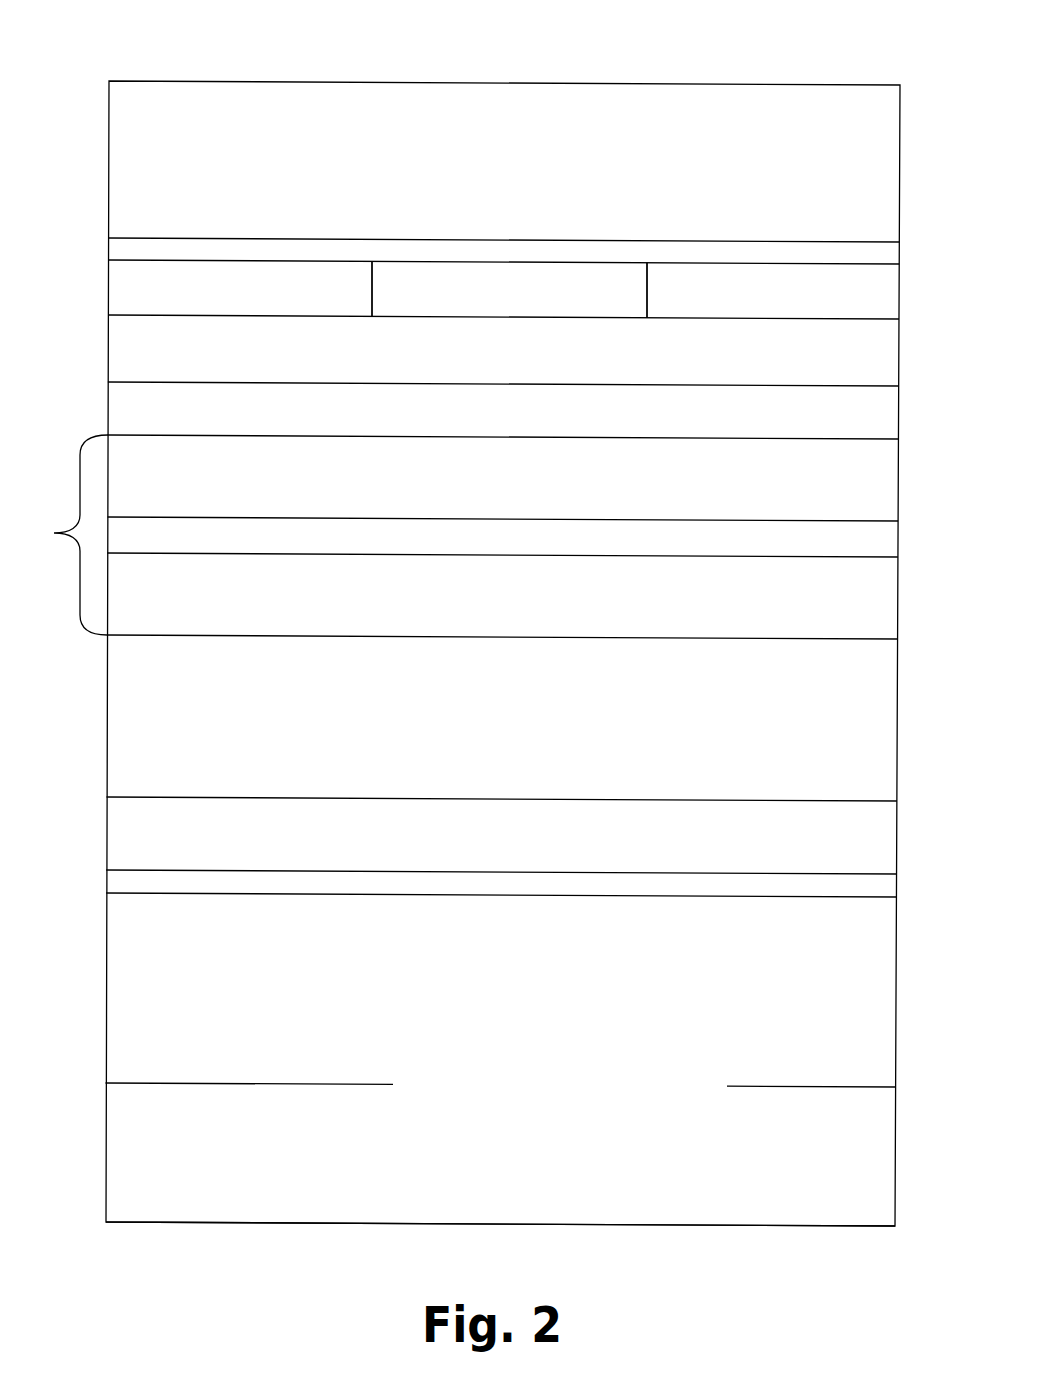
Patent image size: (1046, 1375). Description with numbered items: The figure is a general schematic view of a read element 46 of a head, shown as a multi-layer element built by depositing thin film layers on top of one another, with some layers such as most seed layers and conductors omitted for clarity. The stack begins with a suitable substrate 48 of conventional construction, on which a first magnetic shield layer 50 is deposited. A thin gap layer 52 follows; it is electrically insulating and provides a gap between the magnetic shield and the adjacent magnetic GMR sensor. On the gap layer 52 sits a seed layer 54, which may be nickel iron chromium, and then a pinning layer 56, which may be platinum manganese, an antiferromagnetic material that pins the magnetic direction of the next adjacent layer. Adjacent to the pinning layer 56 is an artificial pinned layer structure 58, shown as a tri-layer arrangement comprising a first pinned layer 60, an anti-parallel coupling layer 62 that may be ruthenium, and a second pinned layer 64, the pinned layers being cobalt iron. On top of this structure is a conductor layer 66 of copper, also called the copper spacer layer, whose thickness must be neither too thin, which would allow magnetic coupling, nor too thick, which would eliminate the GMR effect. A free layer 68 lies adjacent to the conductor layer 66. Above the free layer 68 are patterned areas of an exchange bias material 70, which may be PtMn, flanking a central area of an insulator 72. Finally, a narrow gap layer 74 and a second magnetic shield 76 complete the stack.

The read element 46 is at (819, 62).
The substrate 48 is at (256, 1168).
The first magnetic shield layer 50 is at (256, 981).
The gap layer 52 is at (128, 881).
The seed layer 54 is at (256, 846).
The pinning layer 56 is at (256, 726).
The artificial pinned layer structure 58 is at (61, 535).
The first pinned layer 60 is at (256, 611).
The anti-parallel coupling layer 62 is at (256, 551).
The second pinned layer 64 is at (256, 489).
The conductor layer 66 is at (256, 428).
The free layer 68 is at (256, 368).
The exchange bias material 70 is at (256, 309).
The insulator 72 is at (529, 308).
The narrow gap layer 74 is at (133, 246).
The second magnetic shield 76 is at (256, 183).